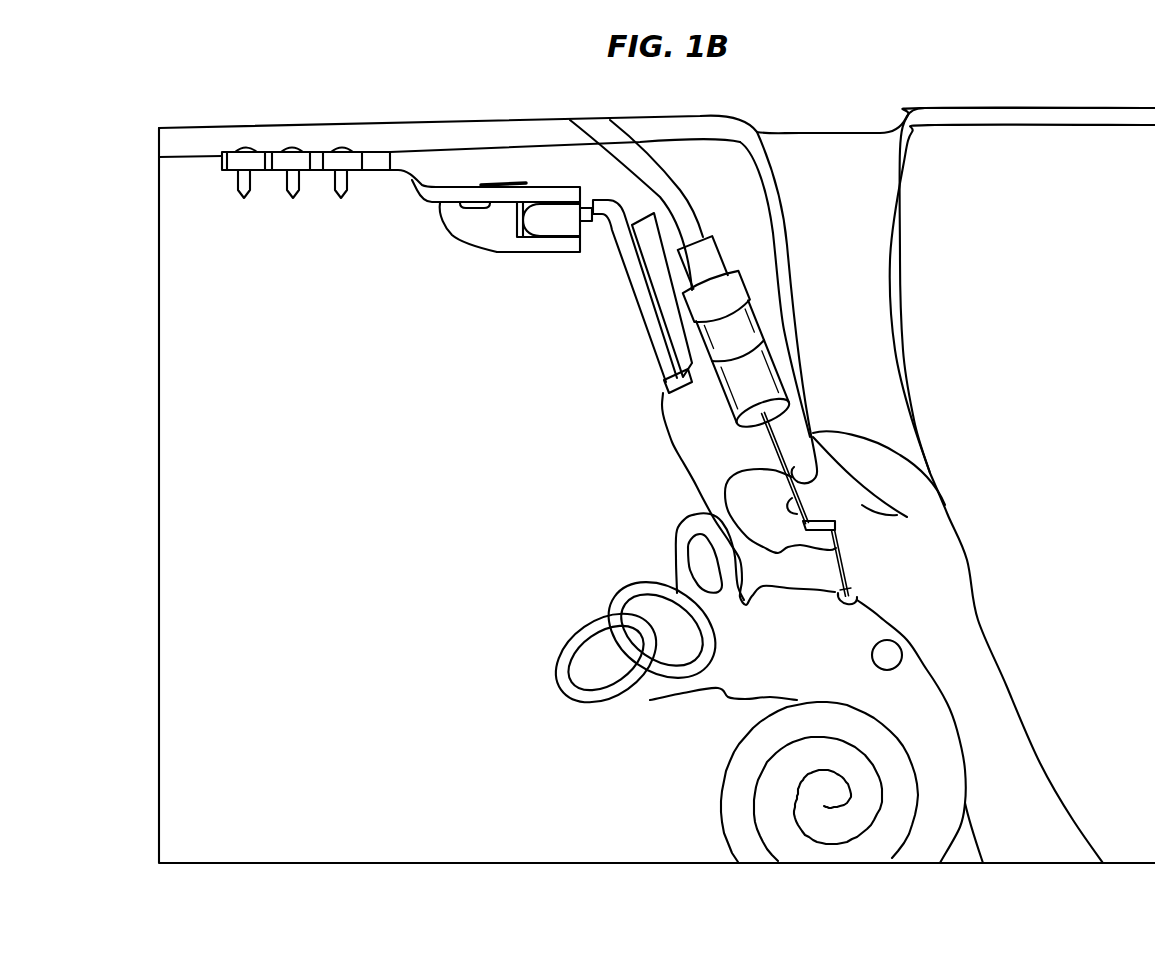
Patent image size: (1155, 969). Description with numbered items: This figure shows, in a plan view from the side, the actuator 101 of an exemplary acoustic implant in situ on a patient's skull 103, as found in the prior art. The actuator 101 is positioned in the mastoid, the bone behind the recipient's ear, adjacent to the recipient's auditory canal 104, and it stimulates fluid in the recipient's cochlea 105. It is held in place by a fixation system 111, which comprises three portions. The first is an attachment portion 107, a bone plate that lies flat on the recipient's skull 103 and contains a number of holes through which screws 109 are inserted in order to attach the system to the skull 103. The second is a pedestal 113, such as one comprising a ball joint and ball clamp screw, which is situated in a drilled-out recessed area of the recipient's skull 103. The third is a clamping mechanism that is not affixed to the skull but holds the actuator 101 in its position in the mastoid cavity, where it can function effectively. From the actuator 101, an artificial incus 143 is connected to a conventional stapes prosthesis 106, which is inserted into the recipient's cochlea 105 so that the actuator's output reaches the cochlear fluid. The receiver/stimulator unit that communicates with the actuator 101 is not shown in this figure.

The actuator 101 is at (770, 360).
The skull 103 is at (1045, 182).
The auditory canal 104 is at (830, 150).
The cochlea 105 is at (927, 703).
The stapes prosthesis 106 is at (852, 587).
The attachment portion 107 is at (395, 160).
The screws 109 is at (334, 152).
The fixation system 111 is at (535, 183).
The pedestal 113 is at (507, 228).
The artificial incus 143 is at (836, 515).